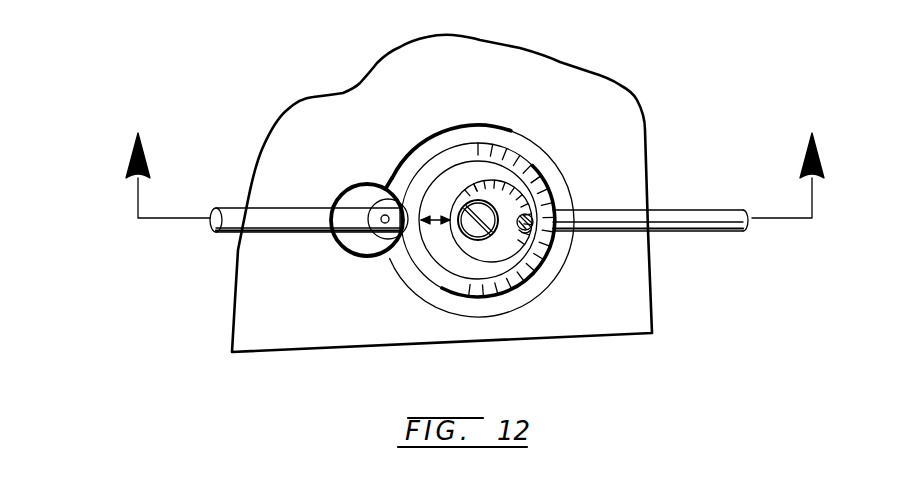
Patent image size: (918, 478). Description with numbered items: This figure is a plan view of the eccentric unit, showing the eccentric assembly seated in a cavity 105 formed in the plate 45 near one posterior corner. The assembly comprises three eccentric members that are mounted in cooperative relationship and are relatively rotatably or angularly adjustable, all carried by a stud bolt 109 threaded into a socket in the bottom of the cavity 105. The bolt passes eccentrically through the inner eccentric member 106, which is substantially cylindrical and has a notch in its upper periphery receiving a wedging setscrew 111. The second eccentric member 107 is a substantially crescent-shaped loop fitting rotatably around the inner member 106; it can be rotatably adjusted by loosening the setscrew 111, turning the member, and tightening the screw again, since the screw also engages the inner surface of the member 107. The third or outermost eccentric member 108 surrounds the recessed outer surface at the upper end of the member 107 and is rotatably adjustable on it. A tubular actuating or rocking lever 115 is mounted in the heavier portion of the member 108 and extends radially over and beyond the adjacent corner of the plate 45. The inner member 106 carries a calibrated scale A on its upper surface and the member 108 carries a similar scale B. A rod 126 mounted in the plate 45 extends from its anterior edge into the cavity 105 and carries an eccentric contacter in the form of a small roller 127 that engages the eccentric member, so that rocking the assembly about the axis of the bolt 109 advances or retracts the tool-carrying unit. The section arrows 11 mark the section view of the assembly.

The plate 45 is at (303, 312).
The section line arrows 11 is at (823, 106).
The cavity 105 is at (447, 138).
The inner eccentric member 106 is at (501, 246).
The second eccentric member 107 is at (435, 247).
The third eccentric member 108 is at (508, 158).
The stud bolt 109 is at (470, 230).
The wedging setscrew 111 is at (560, 245).
The actuating or rocking lever 115 is at (664, 215).
The rod 126 is at (346, 194).
The small roller 127 is at (399, 163).
The calibrated scale A is at (479, 171).
The scale B is at (553, 177).